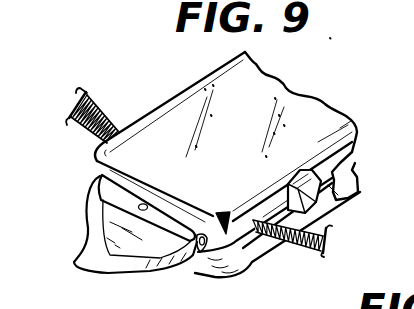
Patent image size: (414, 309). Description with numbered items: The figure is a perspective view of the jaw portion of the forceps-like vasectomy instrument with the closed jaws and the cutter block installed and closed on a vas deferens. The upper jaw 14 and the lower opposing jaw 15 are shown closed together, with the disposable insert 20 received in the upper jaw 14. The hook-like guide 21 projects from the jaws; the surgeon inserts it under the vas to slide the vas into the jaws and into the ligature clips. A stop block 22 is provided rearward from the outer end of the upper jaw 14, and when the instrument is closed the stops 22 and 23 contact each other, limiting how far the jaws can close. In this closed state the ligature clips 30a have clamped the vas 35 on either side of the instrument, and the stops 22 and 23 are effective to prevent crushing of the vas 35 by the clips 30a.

The upper jaw 14 is at (182, 107).
The lower opposing jaw 15 is at (254, 258).
The disposable insert 20 is at (104, 206).
The hook-like guide 21 is at (95, 258).
The stop block 22 is at (348, 165).
The stop 23 is at (325, 190).
The ligature clips 30a is at (200, 256).
The vas deferens 35 is at (291, 247).